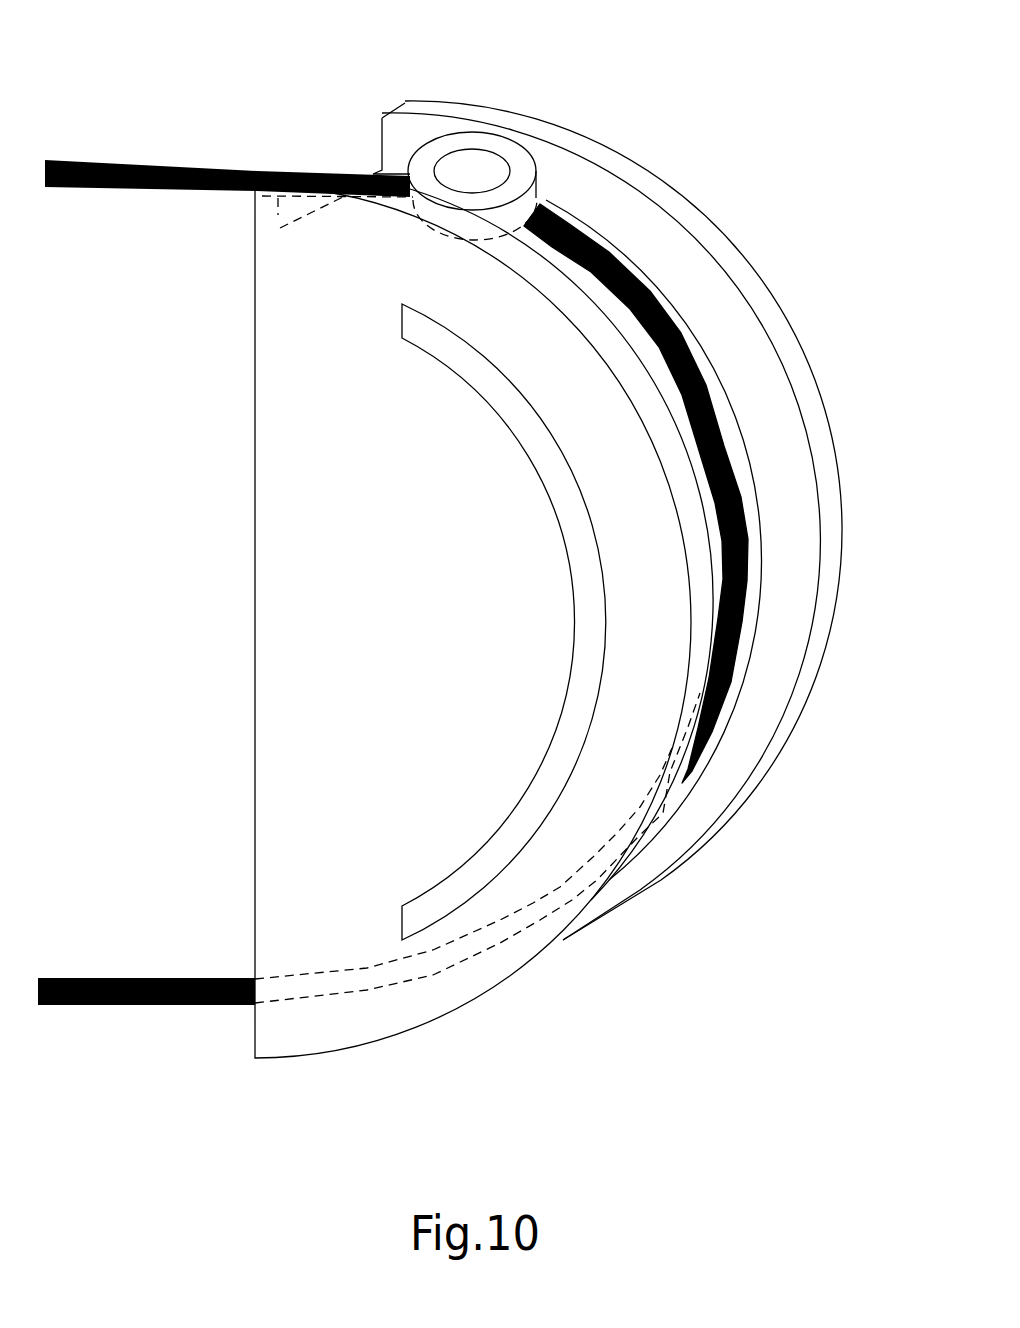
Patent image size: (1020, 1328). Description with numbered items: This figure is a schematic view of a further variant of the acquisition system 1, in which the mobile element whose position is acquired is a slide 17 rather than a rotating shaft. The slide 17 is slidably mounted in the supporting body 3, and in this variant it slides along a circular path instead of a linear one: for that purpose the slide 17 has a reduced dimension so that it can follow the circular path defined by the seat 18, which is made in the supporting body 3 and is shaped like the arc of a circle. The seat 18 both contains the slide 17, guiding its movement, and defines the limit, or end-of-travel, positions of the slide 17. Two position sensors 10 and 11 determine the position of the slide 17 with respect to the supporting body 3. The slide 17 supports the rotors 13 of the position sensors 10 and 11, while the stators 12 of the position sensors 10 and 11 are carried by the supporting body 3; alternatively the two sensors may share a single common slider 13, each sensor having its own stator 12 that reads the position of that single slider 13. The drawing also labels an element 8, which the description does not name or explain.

The acquisition system 1 is at (714, 139).
The supporting body 3 is at (306, 950).
The cable 8 is at (140, 163).
The position sensor 10 is at (607, 575).
The position sensor 11 is at (752, 920).
The stator 12 is at (577, 547).
The rotor 13 is at (480, 160).
The slide 17 is at (518, 150).
The seat 18 is at (706, 363).